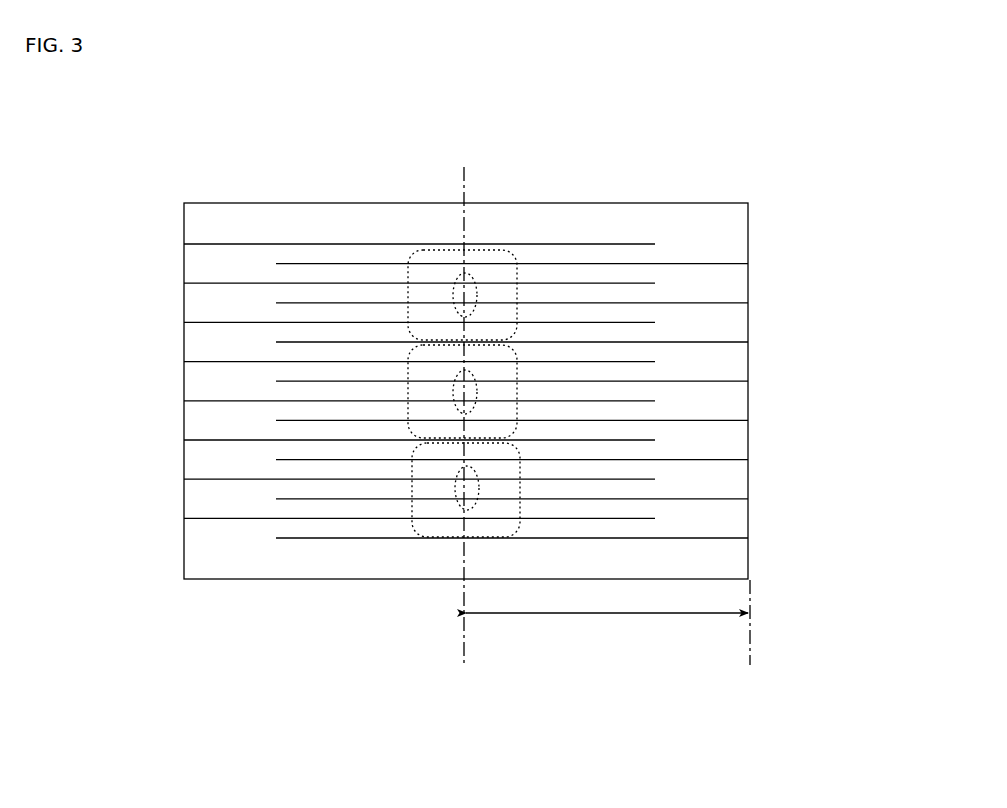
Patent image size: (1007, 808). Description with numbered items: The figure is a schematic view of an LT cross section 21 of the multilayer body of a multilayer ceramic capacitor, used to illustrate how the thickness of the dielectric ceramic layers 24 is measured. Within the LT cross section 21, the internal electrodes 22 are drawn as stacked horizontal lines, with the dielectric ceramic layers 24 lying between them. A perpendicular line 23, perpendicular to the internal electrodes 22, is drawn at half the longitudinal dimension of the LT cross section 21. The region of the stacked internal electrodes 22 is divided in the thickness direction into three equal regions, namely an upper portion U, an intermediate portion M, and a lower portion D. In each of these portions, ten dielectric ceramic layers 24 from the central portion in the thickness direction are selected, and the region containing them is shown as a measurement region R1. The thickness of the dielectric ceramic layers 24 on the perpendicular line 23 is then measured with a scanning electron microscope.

The LT cross section 21 is at (218, 134).
The internal electrodes 22 is at (371, 264).
The perpendicular line 23 is at (466, 173).
The dielectric ceramic layers 24 is at (380, 508).
The measurement region R1 is at (452, 290).
The upper portion U is at (518, 256).
The intermediate portion M is at (520, 353).
The lower portion D is at (518, 450).